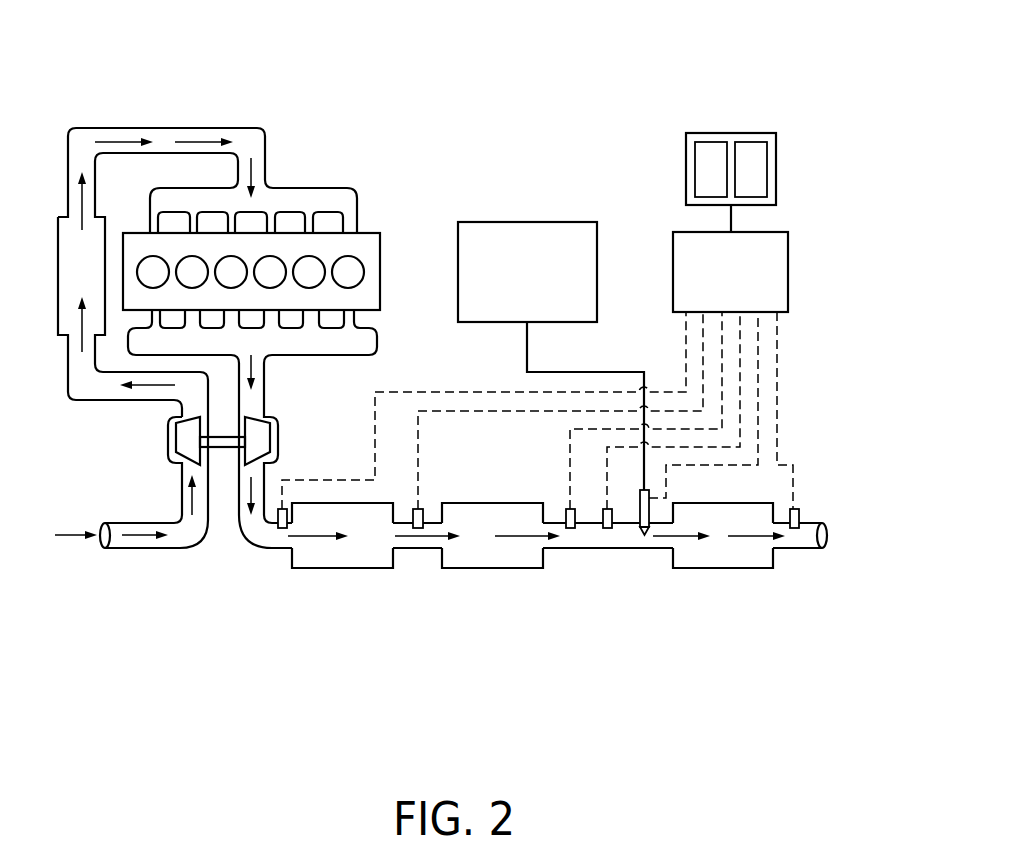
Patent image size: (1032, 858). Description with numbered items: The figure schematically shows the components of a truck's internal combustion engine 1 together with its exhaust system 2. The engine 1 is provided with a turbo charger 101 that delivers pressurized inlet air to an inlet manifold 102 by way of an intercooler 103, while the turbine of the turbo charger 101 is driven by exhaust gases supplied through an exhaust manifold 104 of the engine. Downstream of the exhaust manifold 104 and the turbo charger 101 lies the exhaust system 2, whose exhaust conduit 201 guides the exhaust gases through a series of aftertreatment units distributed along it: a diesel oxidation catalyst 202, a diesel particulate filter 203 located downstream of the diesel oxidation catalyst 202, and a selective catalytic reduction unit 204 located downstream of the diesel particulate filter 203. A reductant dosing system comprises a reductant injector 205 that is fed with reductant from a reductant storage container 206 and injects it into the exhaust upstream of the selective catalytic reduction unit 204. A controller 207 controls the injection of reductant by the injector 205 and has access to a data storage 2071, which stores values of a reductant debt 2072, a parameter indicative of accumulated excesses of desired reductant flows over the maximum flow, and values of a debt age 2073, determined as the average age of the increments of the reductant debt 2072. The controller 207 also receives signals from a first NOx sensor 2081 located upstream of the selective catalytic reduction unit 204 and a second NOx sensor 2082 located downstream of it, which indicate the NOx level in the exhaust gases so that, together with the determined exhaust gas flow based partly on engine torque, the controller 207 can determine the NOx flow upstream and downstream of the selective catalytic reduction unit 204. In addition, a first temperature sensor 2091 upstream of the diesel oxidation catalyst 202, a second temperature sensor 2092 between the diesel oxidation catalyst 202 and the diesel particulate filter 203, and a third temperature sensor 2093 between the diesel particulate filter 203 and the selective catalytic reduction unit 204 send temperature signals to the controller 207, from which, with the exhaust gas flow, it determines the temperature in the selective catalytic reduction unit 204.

The internal combustion engine 1 is at (380, 272).
The exhaust system 2 is at (226, 678).
The turbo charger 101 is at (188, 438).
The inlet manifold 102 is at (317, 188).
The intercooler 103 is at (105, 227).
The exhaust manifold 104 is at (318, 357).
The exhaust conduit 201 is at (245, 536).
The diesel oxidation catalyst 202 is at (345, 568).
The diesel particulate filter 203 is at (490, 568).
The selective catalytic reduction unit 204 is at (730, 568).
The reductant injector 205 is at (644, 535).
The reductant storage container 206 is at (524, 222).
The controller 207 is at (673, 272).
The data storage 2071 is at (776, 168).
The reductant debt 2072 is at (710, 142).
The debt age 2073 is at (754, 142).
The first NOx sensor 2081 is at (607, 530).
The second NOx sensor 2082 is at (795, 530).
The first temperature sensor 2091 is at (282, 530).
The second temperature sensor 2092 is at (418, 530).
The third temperature sensor 2093 is at (570, 530).